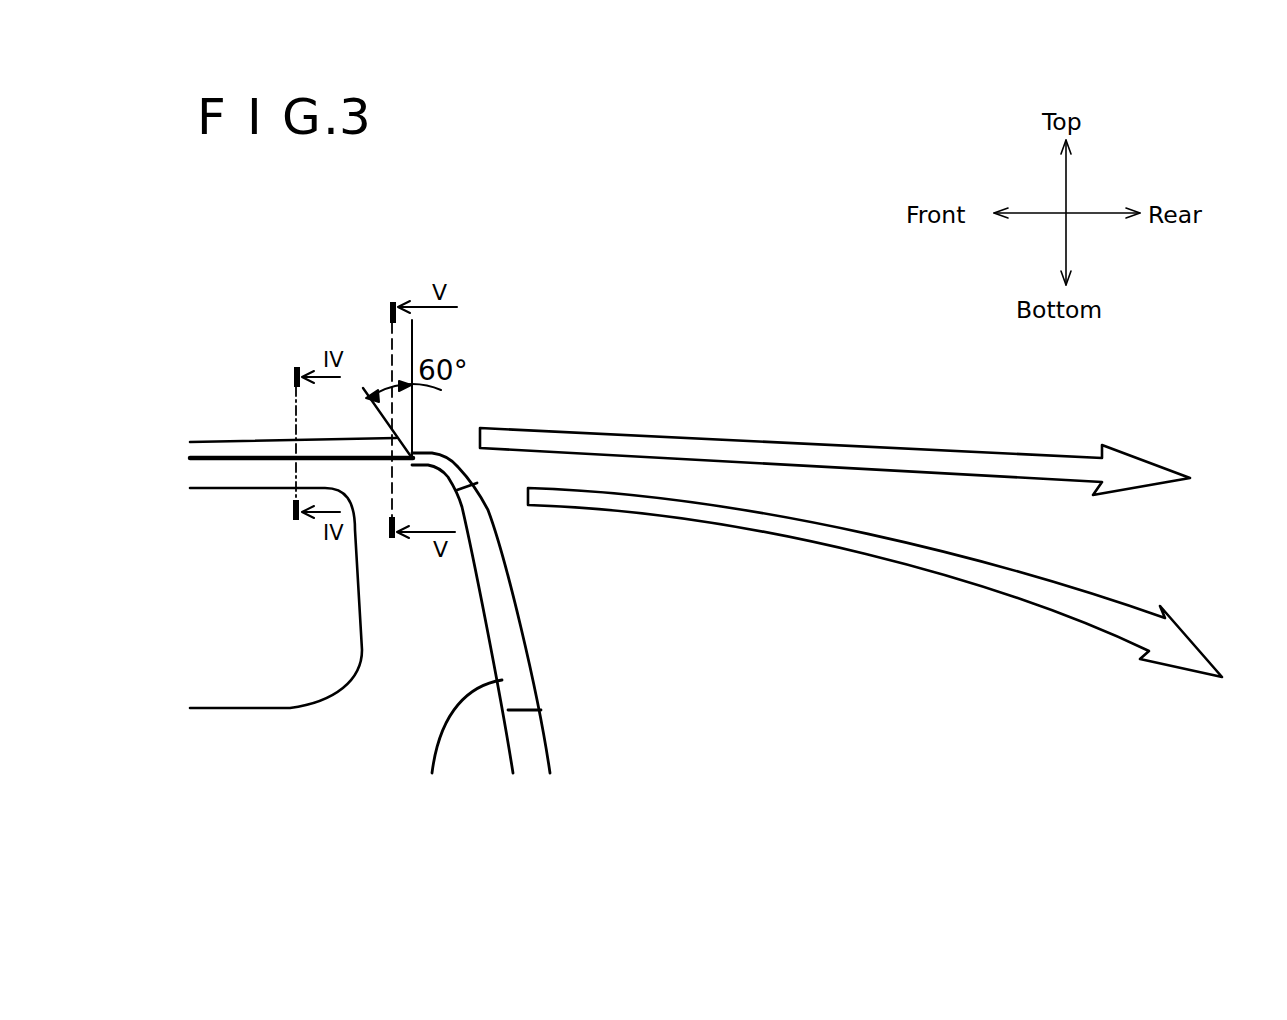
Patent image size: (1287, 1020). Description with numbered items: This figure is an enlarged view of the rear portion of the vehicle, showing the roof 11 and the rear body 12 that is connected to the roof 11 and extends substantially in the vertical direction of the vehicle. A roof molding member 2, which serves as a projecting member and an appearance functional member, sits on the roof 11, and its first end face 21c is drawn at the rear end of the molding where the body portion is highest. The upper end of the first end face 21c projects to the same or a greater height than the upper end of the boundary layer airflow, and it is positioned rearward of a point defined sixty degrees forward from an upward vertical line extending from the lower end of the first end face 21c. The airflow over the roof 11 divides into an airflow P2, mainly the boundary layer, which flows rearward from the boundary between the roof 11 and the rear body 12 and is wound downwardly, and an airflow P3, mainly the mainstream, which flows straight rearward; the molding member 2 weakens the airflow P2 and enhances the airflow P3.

The roof molding member 2 is at (228, 425).
The roof 11 is at (268, 440).
The rear body 12 is at (518, 583).
The first end face 21c is at (408, 458).
The airflow P2 is at (881, 609).
The airflow P3 is at (844, 490).